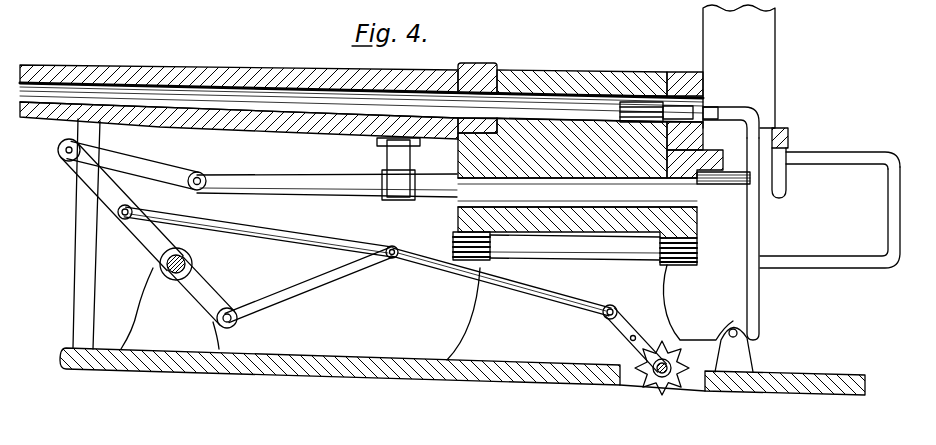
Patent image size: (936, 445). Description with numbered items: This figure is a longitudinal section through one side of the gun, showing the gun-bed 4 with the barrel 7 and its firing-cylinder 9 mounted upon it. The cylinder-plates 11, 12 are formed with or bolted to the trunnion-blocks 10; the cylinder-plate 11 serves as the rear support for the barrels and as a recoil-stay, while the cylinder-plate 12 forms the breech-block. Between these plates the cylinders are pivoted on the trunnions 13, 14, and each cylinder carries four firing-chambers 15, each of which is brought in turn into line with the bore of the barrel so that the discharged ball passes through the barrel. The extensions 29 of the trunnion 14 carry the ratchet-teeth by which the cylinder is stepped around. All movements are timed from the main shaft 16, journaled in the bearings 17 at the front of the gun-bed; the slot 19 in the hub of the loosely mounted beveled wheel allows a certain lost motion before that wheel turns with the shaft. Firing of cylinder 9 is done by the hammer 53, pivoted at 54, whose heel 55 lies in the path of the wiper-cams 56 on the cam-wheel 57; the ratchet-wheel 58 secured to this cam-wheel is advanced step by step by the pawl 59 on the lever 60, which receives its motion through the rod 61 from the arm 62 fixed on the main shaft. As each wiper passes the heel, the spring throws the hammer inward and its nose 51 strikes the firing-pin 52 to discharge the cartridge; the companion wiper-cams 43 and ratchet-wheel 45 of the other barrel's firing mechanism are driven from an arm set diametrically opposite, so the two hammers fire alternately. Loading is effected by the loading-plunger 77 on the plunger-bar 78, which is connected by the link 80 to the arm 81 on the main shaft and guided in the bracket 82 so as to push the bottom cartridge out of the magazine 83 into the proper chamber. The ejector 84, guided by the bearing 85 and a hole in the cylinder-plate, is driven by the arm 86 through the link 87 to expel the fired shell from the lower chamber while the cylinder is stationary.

The gun-bed 4 is at (455, 377).
The barrel 7 is at (303, 68).
The firing-cylinder 9 is at (570, 80).
The trunnion-blocks 10 is at (309, 239).
The cylinder-plate 11 is at (472, 70).
The cylinder-plate 12 is at (676, 80).
The trunnion 13 is at (457, 155).
The trunnion 14 is at (702, 183).
The firing-chambers 15 is at (510, 105).
The main shaft 16 is at (172, 274).
The bearings 17 is at (170, 308).
The slot 19 is at (455, 242).
The extensions 29 is at (707, 161).
The wiper-cams 43 is at (670, 2).
The ratchet-wheel 45 is at (689, 12).
The nose 51 is at (712, 118).
The firing-pin 52 is at (700, 105).
The hammer 53 is at (762, 233).
The pivot 54 is at (740, 334).
The heel 55 is at (697, 332).
The wiper-cams 56 is at (660, 393).
The cam-wheel 57 is at (648, 384).
The ratchet-wheel 58 is at (680, 382).
The pawl 59 is at (625, 344).
The lever 60 is at (626, 322).
The rod 61 is at (410, 275).
The arm 62 is at (118, 216).
The loading-plunger 77 is at (830, 160).
The plunger-bar 78 is at (830, 217).
The link 80 is at (312, 292).
The arm 81 is at (216, 302).
The bracket 82 is at (787, 178).
The magazine 83 is at (763, 57).
The ejector 84 is at (297, 180).
The bearing 85 is at (388, 160).
The arm 86 is at (78, 180).
The link 87 is at (152, 170).